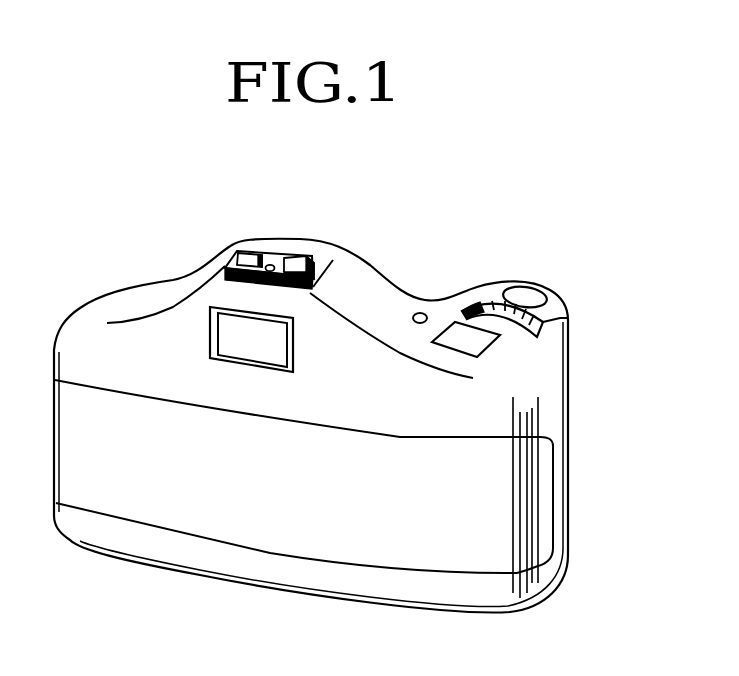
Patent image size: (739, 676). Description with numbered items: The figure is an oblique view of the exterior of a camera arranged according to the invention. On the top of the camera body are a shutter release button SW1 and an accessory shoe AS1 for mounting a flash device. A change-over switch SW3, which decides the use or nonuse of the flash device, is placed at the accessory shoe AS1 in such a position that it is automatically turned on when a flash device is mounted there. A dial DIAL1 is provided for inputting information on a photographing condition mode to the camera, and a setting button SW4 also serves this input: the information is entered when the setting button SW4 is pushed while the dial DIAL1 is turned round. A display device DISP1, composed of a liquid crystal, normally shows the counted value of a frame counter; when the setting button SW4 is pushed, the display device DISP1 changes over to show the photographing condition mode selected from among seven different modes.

The accessory shoe AS1 is at (250, 262).
The change-over switch SW3 is at (282, 260).
The setting button SW4 is at (420, 313).
The shutter release button SW1 is at (527, 296).
The dial DIAL1 is at (570, 318).
The display device DISP1 is at (500, 337).